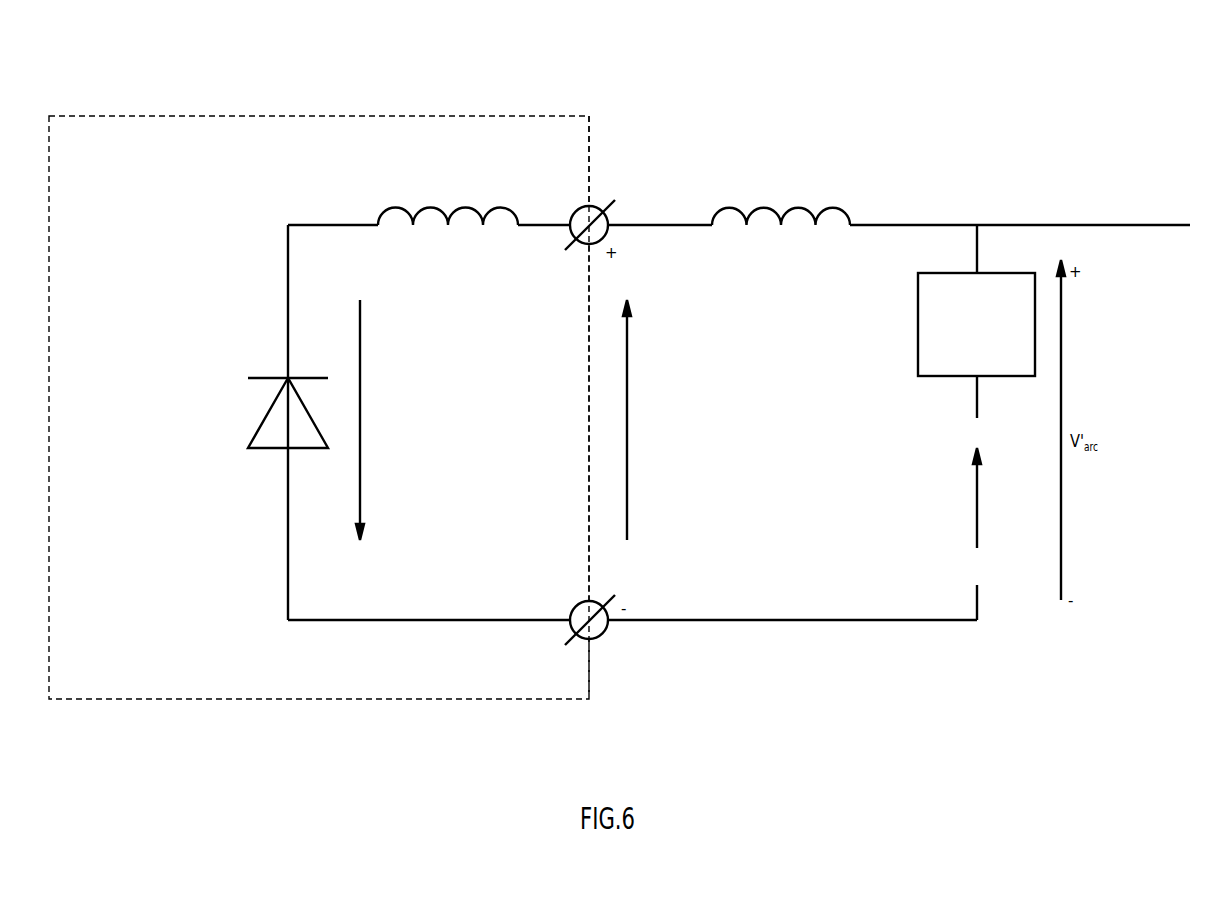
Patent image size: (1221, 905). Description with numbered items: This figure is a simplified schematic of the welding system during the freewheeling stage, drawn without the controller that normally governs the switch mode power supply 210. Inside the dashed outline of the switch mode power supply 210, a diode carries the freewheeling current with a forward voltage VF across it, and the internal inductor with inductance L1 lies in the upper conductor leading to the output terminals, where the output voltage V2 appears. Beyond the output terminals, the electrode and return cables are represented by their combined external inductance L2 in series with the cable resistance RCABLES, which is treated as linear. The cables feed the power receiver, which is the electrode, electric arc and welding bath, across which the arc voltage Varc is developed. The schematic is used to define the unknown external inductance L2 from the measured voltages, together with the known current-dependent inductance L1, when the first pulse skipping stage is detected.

The switch mode power supply 210 is at (318, 116).
The inductance of the internal inductor L1 is at (448, 203).
The combined inductance of the cables L2 is at (781, 203).
The cable resistance RCABLES is at (976, 324).
The diode forward voltage VF is at (372, 420).
The output voltage V2 is at (639, 424).
The arc voltage Varc is at (969, 528).